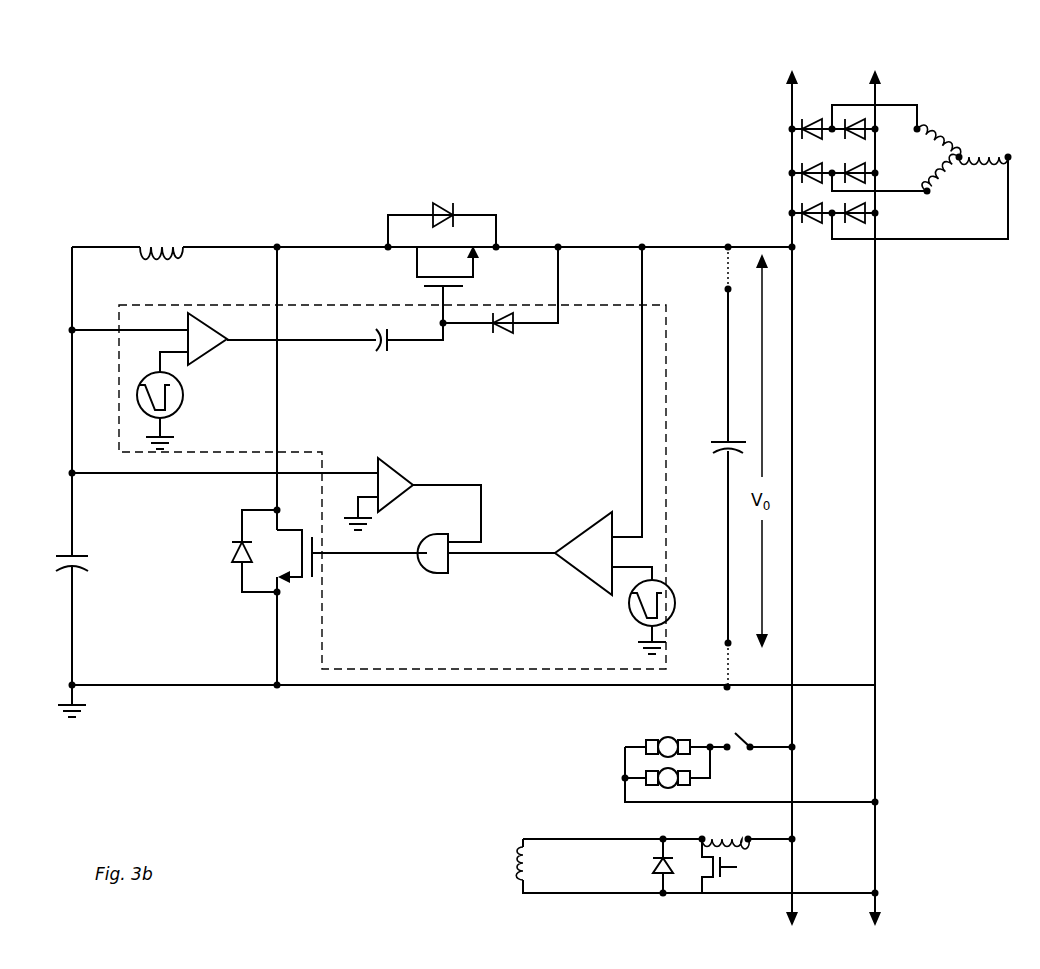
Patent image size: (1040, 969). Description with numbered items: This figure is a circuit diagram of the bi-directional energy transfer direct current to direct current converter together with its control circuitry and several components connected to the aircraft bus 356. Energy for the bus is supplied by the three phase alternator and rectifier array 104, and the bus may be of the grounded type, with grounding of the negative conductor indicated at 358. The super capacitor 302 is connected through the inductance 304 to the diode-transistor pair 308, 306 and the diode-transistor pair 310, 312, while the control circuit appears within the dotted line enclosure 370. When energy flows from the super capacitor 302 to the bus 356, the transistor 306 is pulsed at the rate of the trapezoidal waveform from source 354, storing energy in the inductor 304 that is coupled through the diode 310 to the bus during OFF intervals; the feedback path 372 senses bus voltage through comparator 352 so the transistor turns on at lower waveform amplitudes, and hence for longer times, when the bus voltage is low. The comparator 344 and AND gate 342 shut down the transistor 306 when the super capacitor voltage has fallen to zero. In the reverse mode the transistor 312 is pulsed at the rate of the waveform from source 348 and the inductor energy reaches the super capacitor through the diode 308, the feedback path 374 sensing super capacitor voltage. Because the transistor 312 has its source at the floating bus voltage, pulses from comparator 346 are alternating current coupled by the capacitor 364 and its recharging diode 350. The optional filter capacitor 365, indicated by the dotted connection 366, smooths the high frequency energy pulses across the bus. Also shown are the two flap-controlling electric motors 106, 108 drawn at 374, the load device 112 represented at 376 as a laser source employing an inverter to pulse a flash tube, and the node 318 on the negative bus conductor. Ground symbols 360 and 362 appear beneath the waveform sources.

The three phase alternator and rectifier array 104 is at (986, 62).
The motor 106 is at (668, 737).
The motor 108 is at (655, 770).
The electronic circuit load device 112 is at (526, 828).
The super capacitor Cs 302 is at (78, 580).
The inductance L 304 is at (170, 262).
The transistor T1 306 is at (318, 565).
The diode D1 308 is at (233, 567).
The diode D2 310 is at (455, 207).
The transistor T2 312 is at (413, 270).
The node 318 is at (711, 667).
The logic AND gate 342 is at (445, 577).
The operational amplifier voltage sensing comparator 344 is at (395, 470).
The comparator 346 is at (214, 355).
The trapezoidal waveform source 348 is at (137, 407).
The charging diode 350 is at (508, 335).
The operational amplifier voltage sensing comparator 352 is at (580, 535).
The trapezoidal waveform source 354 is at (662, 587).
The aircraft bus 356 is at (880, 320).
The ground connection 358 is at (80, 700).
The ground 360 is at (168, 428).
The ground 362 is at (640, 640).
The alternating current signal coupling capacitor 364 is at (395, 345).
The filter capacitor 365 is at (725, 462).
The dotted connection 366 is at (724, 275).
The dotted line enclosure 370 is at (500, 668).
The feedback path 372 is at (642, 366).
The feedback path / wing flap motors 374 is at (108, 330).
The load device schematic 376 is at (651, 840).